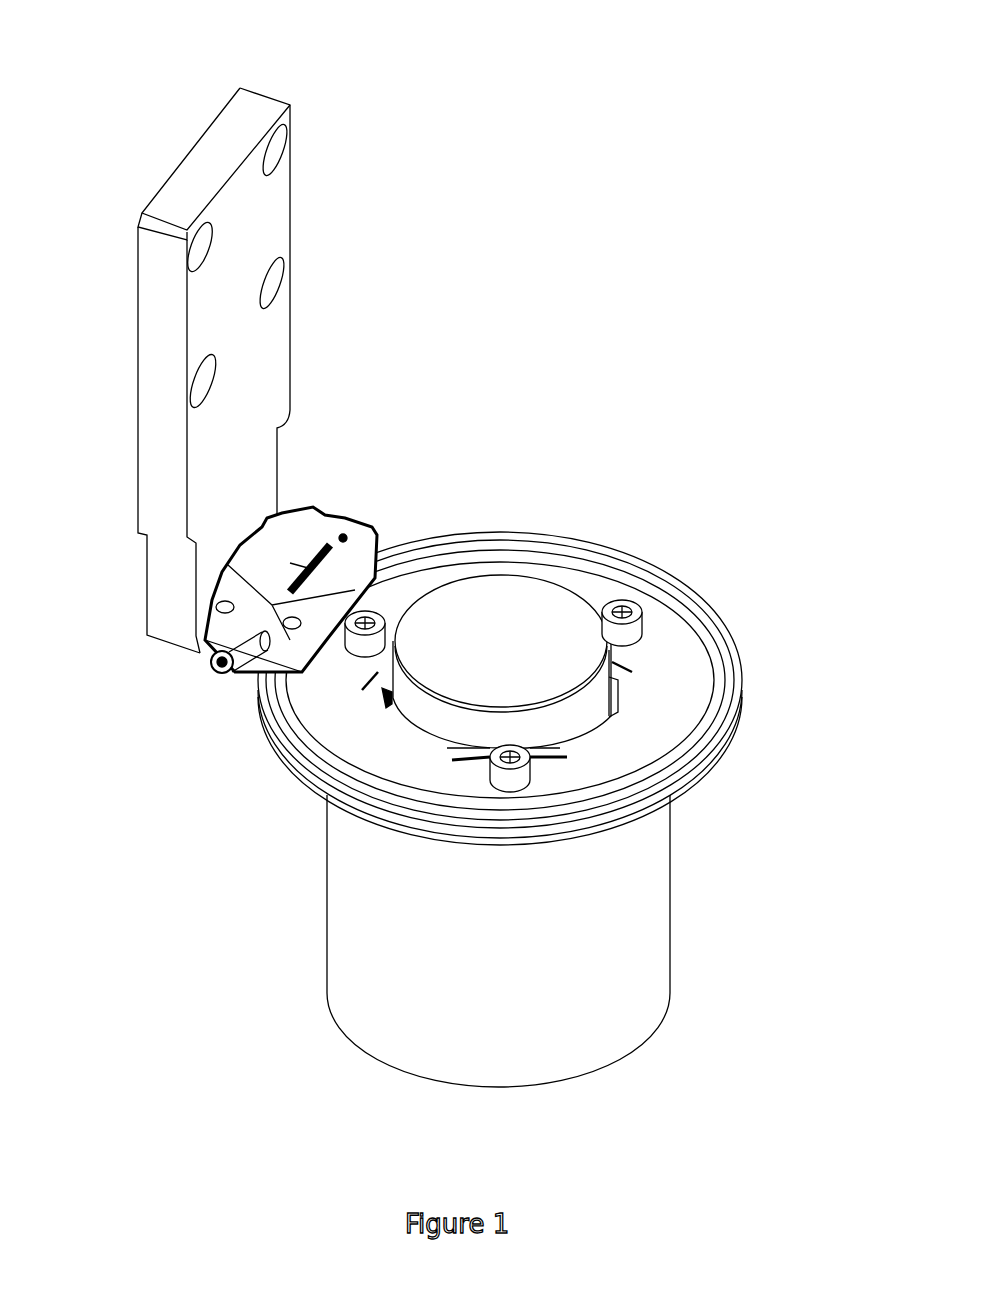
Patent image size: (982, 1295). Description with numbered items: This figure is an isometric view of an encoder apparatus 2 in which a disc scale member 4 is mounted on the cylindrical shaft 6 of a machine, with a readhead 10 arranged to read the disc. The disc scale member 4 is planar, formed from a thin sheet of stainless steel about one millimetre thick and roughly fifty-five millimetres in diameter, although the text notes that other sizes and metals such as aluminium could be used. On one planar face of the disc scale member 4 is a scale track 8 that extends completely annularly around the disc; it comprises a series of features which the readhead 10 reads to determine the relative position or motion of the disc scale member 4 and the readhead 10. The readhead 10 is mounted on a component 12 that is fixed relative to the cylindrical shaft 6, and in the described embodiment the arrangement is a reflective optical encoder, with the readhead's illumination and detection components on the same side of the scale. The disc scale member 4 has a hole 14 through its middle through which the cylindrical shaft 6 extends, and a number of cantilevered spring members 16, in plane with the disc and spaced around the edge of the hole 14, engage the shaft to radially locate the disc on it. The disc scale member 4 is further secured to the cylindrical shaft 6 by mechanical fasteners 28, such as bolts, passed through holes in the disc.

The encoder apparatus 2 is at (770, 102).
The disc scale member 4 is at (703, 604).
The cylindrical shaft 6 is at (537, 658).
The scale track 8 is at (571, 559).
The readhead 10 is at (323, 528).
The component 12 is at (267, 367).
The hole 14 is at (390, 702).
The cantilevered spring members 16 is at (612, 665).
The mechanical fasteners 28 is at (380, 618).